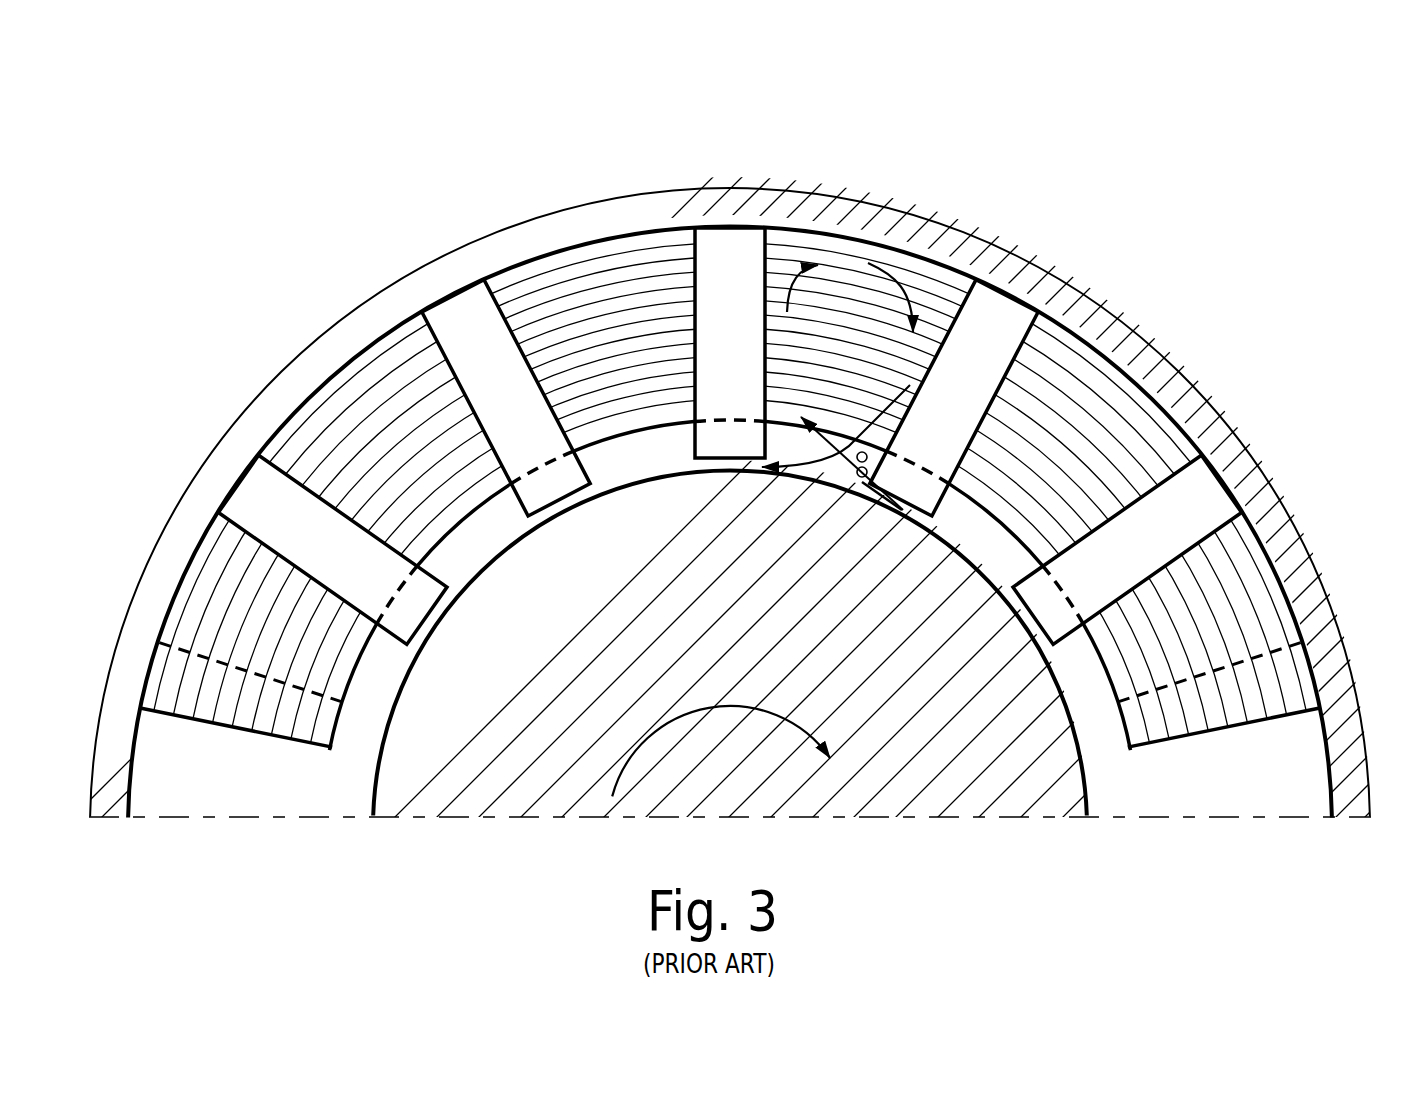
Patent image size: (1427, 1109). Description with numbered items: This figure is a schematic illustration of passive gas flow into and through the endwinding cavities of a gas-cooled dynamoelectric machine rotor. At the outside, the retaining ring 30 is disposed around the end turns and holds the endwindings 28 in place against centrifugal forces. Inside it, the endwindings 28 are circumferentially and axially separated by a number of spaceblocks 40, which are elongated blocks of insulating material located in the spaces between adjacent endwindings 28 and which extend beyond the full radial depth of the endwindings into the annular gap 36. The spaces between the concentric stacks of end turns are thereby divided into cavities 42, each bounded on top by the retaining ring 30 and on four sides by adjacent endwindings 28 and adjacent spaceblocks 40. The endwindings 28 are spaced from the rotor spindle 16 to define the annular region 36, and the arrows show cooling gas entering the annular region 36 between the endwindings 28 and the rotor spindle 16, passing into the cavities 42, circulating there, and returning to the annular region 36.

The rotor spindle 16 is at (868, 795).
The endwindings 28 is at (1238, 733).
The retaining ring 30 is at (1330, 653).
The annular region 36 is at (635, 460).
The spaceblocks 40 is at (729, 250).
The cavities 42 is at (1086, 427).